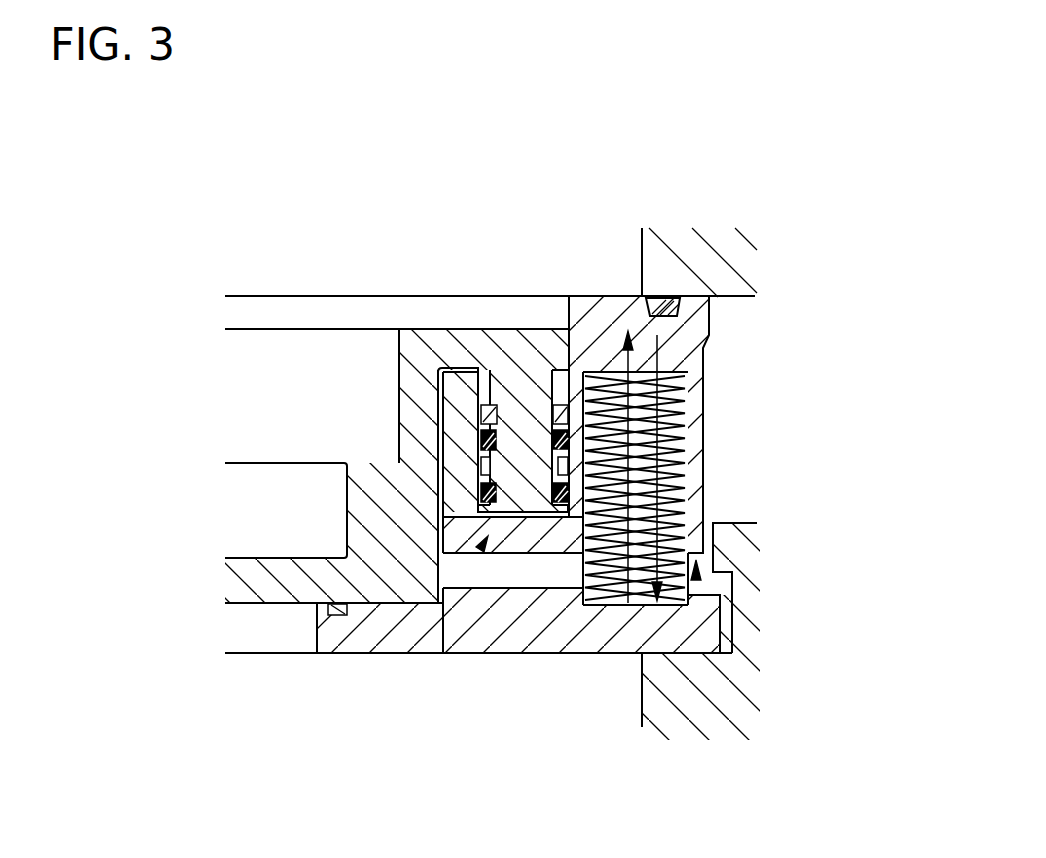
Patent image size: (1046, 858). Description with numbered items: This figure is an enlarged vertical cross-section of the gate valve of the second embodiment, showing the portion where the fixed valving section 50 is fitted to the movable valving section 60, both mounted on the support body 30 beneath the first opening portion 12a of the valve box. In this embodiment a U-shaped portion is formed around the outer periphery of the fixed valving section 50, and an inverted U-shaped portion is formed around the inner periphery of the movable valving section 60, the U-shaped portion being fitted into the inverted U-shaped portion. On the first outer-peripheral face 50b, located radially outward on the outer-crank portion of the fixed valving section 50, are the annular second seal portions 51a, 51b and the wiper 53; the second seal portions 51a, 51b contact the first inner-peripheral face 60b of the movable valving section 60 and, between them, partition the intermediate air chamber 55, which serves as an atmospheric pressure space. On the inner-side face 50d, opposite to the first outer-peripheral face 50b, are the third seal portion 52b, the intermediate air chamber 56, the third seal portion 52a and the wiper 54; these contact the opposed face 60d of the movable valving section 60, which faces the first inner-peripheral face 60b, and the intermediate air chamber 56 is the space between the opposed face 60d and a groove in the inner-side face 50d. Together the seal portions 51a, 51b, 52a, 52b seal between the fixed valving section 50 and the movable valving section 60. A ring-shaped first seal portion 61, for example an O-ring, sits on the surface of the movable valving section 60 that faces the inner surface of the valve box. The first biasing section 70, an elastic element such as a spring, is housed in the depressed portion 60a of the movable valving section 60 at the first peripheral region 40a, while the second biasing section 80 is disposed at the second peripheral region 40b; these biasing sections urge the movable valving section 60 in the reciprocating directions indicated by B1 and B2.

The first opening portion 12a is at (362, 253).
The support body 30 is at (712, 627).
The first peripheral region 40a is at (697, 580).
The second peripheral region 40b is at (481, 548).
The fixed valving section 50 is at (423, 347).
The first outer-peripheral face 50b is at (568, 371).
The inner-side face 50d is at (462, 373).
The second seal portion 51a is at (560, 440).
The second seal portion 51b is at (557, 505).
The third seal portion 52a is at (482, 437).
The third seal portion 52b is at (482, 493).
The wiper 53 is at (557, 405).
The wiper 54 is at (484, 412).
The intermediate air chamber 55 is at (512, 430).
The intermediate air chamber 56 is at (483, 466).
The movable valving section 60 is at (602, 327).
The depressed portion 60a is at (597, 525).
The first inner-peripheral face 60b is at (567, 370).
The opposed face 60d is at (512, 430).
The first seal portion 61 is at (662, 297).
The first biasing section 70 is at (684, 493).
The second biasing section 80 is at (535, 515).
The reciprocating direction B1 is at (632, 338).
The reciprocating direction B2 is at (658, 348).